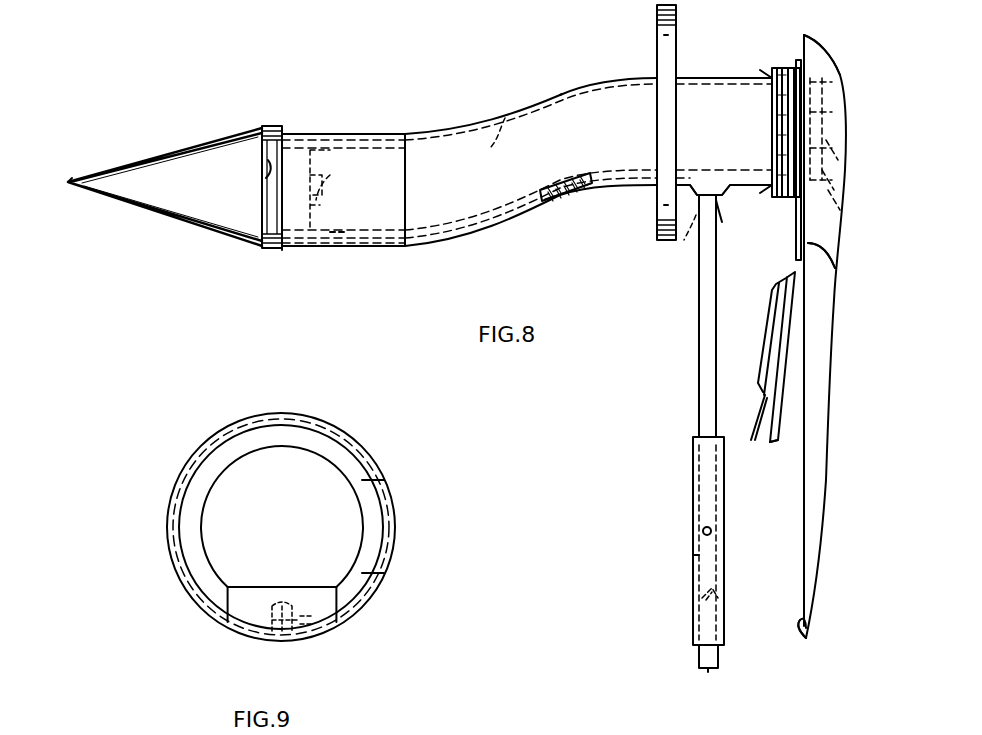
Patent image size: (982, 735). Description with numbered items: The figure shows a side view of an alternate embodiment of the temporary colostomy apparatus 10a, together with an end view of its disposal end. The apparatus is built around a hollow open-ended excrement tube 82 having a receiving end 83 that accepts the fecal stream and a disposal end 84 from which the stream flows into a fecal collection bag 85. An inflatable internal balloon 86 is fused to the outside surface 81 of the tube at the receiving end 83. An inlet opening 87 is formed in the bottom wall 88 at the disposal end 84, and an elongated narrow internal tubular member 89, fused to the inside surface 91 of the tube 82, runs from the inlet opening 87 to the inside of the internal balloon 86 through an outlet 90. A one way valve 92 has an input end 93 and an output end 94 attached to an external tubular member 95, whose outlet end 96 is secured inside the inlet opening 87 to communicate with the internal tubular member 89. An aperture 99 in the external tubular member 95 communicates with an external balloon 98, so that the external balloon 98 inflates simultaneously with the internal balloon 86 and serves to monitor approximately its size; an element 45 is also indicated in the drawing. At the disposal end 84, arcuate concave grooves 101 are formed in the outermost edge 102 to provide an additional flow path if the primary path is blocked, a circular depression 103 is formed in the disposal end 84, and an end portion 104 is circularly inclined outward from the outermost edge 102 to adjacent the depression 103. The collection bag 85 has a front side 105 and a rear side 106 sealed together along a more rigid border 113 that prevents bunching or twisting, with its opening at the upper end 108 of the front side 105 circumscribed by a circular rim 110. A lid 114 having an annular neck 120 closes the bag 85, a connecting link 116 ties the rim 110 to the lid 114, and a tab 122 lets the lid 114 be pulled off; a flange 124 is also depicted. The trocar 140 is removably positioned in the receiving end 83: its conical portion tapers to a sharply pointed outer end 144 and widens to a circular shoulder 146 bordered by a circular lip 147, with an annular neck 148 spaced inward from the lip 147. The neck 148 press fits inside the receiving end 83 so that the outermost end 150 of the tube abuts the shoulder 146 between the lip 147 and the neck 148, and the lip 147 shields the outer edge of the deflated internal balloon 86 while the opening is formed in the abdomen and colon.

In FIG. 8, the temporary colostomy apparatus 10a is at (162, 316).
In FIG. 8, the actuating rod 45 is at (698, 555).
In FIG. 8, the outside surface 81 is at (424, 246).
In FIG. 8, the excrement tube 82 is at (528, 102).
In FIG. 9, the excrement tube 82 is at (332, 424).
In FIG. 8, the receiving end 83 is at (295, 252).
In FIG. 8, the disposal end 84 is at (716, 78).
In FIG. 9, the disposal end 84 is at (395, 488).
In FIG. 8, the fecal collection bag 85 is at (825, 402).
In FIG. 8, the internal balloon 86 is at (372, 250).
In FIG. 8, the inlet opening 87 is at (722, 208).
In FIG. 8, the bottom wall 88 is at (742, 184).
In FIG. 8, the internal tubular member 89 is at (566, 197).
In FIG. 9, the internal tubular member 89 is at (320, 628).
In FIG. 8, the outlet 90 is at (334, 250).
In FIG. 9, the outlet 90 is at (283, 630).
In FIG. 8, the inside surface 91 is at (490, 152).
In FIG. 8, the one way valve 92 is at (720, 658).
In FIG. 8, the input end 93 is at (708, 670).
In FIG. 8, the output end 94 is at (714, 592).
In FIG. 8, the external tubular member 95 is at (698, 390).
In FIG. 8, the outlet end 96 is at (686, 240).
In FIG. 8, the external balloon 98 is at (693, 486).
In FIG. 8, the aperture 99 is at (702, 531).
In FIG. 8, the arcuate concave grooves 101 is at (838, 142).
In FIG. 9, the arcuate concave grooves 101 is at (382, 518).
In FIG. 8, the outermost edge 102 is at (840, 170).
In FIG. 9, the outermost edge 102 is at (372, 598).
In FIG. 8, the circular depression 103 is at (778, 68).
In FIG. 9, the circular depression 103 is at (396, 548).
In FIG. 8, the end portion 104 is at (838, 88).
In FIG. 8, the front side 105 is at (800, 470).
In FIG. 8, the rear side 106 is at (830, 496).
In FIG. 8, the upper end 108 is at (836, 121).
In FIG. 8, the circular rim 110 is at (836, 62).
In FIG. 8, the border 113 is at (814, 634).
In FIG. 8, the lid 114 is at (747, 436).
In FIG. 8, the connecting link 116 is at (836, 254).
In FIG. 8, the annular neck 120 is at (803, 34).
In FIG. 8, the tab 122 is at (778, 436).
In FIG. 8, the flange 124 is at (670, 26).
In FIG. 8, the trocar 140 is at (178, 220).
In FIG. 8, the pointed outer end 144 is at (68, 184).
In FIG. 8, the circular shoulder 146 is at (351, 183).
In FIG. 8, the circular lip 147 is at (270, 246).
In FIG. 8, the annular neck 148 is at (335, 134).
In FIG. 8, the outermost end 150 is at (262, 176).